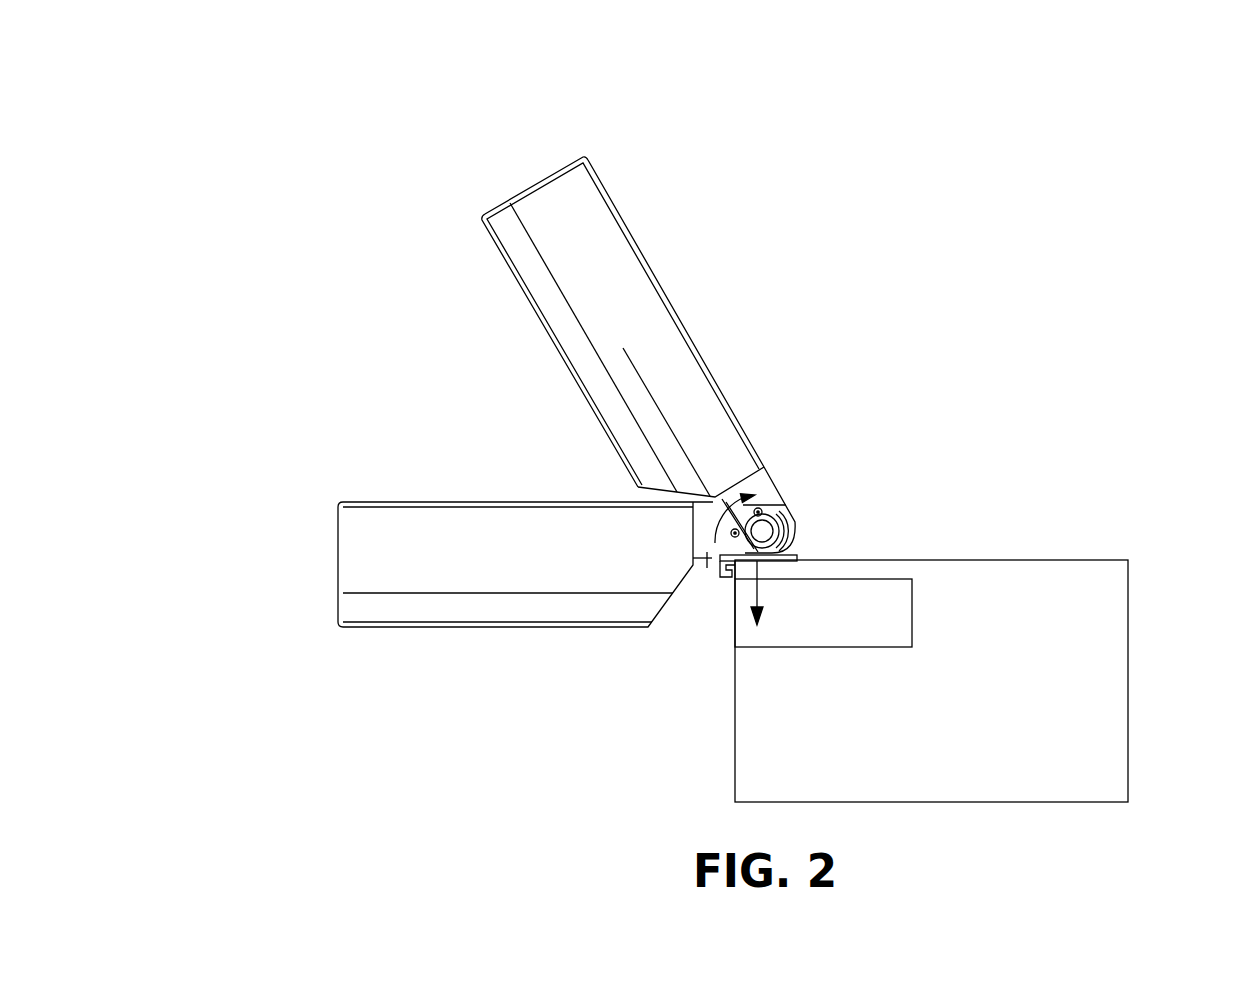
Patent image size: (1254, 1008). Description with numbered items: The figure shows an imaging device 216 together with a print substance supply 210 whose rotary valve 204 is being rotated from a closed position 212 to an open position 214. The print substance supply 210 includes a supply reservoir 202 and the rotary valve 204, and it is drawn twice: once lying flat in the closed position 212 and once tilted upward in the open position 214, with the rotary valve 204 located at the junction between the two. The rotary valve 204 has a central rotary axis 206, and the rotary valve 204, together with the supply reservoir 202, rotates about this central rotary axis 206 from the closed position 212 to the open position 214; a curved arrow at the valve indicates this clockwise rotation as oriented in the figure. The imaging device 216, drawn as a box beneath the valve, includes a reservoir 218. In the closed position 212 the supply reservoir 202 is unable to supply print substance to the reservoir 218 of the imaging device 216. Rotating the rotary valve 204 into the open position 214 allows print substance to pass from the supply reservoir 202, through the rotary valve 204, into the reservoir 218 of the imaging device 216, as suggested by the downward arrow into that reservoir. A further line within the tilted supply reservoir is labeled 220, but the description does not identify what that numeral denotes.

The print substance supply 210 is at (312, 108).
The supply reservoir 202 is at (553, 213).
The rotary valve 204 is at (768, 498).
The central rotary axis 206 is at (768, 521).
The closed position 212 is at (338, 553).
The open position 214 is at (492, 201).
The imaging device 216 is at (1128, 642).
The reservoir 218 is at (912, 612).
The panel inner line 220 is at (670, 420).